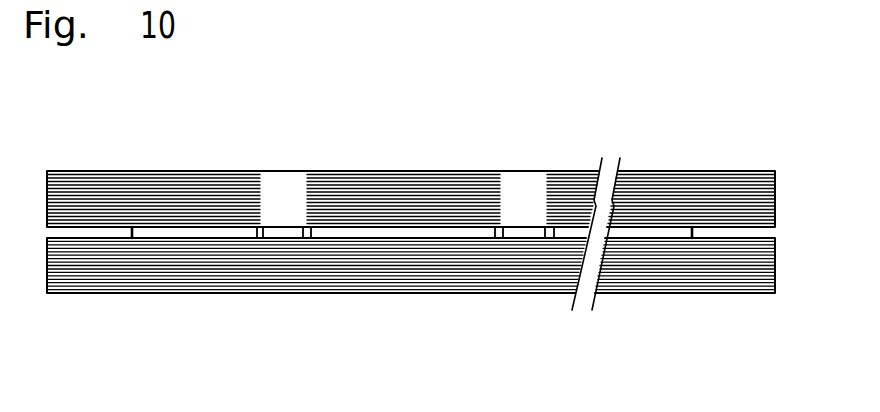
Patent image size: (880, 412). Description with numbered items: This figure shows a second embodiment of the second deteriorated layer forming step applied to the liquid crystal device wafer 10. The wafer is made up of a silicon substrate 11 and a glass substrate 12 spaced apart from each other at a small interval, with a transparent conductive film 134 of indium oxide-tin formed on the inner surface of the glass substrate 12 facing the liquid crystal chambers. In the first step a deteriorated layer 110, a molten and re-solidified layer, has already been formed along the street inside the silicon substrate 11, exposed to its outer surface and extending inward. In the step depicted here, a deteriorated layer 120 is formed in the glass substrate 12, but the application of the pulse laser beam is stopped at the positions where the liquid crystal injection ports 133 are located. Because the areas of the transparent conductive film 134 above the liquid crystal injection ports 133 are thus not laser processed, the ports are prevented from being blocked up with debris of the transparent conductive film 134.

The liquid crystal device wafer 10 is at (363, 144).
The silicon substrate 11 is at (365, 293).
The glass substrate 12 is at (233, 172).
The deteriorated layer 110 is at (660, 278).
The deteriorated layer 120 is at (137, 188).
The liquid crystal injection port 133 is at (278, 232).
The transparent conductive film 134 is at (429, 230).